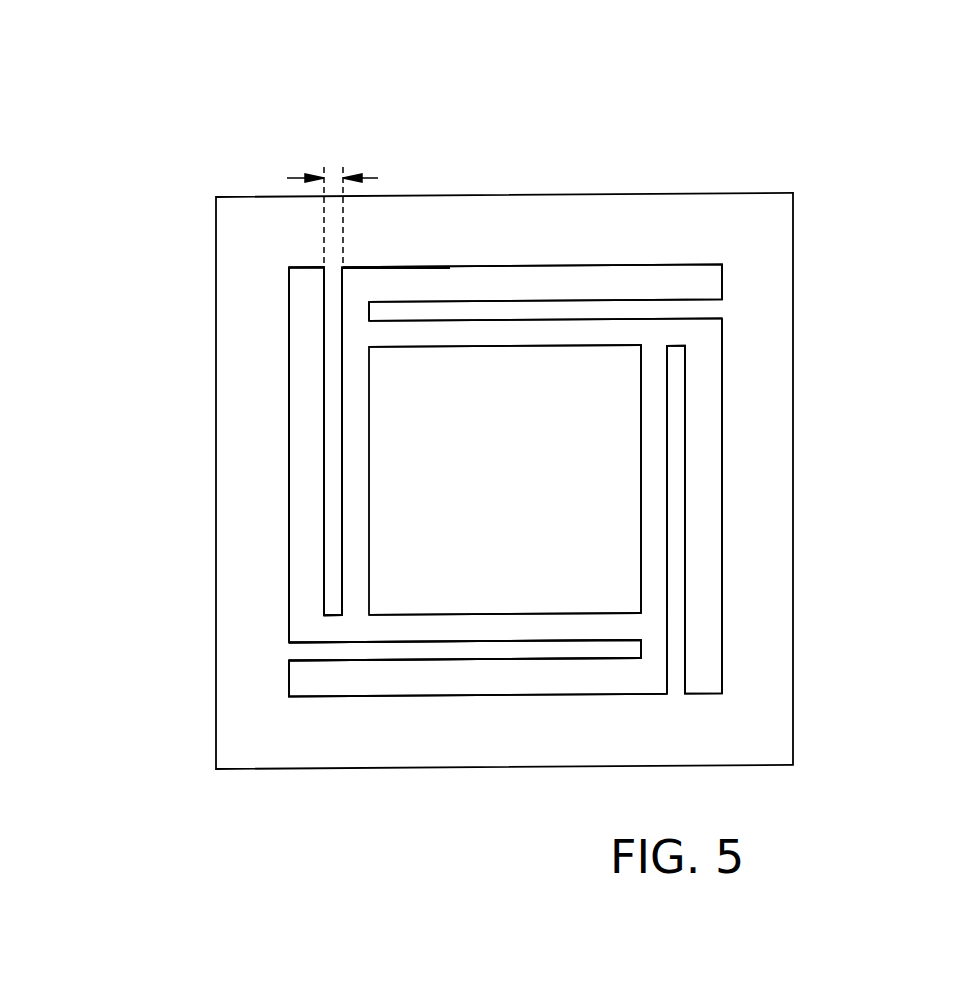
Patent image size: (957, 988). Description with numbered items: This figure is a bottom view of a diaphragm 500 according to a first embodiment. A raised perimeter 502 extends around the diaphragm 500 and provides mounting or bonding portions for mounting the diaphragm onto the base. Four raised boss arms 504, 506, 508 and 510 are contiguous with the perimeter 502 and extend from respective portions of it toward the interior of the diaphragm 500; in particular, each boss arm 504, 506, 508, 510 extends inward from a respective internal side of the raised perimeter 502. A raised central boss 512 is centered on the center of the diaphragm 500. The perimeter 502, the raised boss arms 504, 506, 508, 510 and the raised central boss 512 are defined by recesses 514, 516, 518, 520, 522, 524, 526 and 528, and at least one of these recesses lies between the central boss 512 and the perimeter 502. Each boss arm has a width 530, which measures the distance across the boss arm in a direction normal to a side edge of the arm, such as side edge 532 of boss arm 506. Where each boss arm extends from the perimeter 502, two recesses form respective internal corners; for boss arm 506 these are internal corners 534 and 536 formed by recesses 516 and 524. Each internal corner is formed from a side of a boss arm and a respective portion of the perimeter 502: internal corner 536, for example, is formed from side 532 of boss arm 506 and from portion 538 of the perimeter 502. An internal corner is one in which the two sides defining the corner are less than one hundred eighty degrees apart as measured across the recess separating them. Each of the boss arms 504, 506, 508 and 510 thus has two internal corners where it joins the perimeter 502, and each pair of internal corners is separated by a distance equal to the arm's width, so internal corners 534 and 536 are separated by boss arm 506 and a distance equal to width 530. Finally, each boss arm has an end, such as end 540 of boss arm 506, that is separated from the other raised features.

The diaphragm 500 is at (520, 454).
The raised perimeter 502 is at (738, 513).
The raised boss arm 504 is at (513, 300).
The raised boss arm 506 is at (322, 492).
The raised boss arm 508 is at (525, 653).
The raised boss arm 510 is at (677, 446).
The raised central boss 512 is at (485, 495).
The recess 514 is at (537, 275).
The recess 516 is at (299, 307).
The recess 518 is at (397, 672).
The recess 520 is at (702, 668).
The recess 522 is at (610, 337).
The recess 524 is at (352, 428).
The recess 526 is at (600, 632).
The recess 528 is at (658, 607).
The width 530 is at (291, 176).
The side edge 532 is at (344, 377).
The internal corner 534 is at (323, 269).
The internal corner 536 is at (343, 268).
The portion of perimeter 538 is at (392, 266).
The end 540 is at (334, 617).